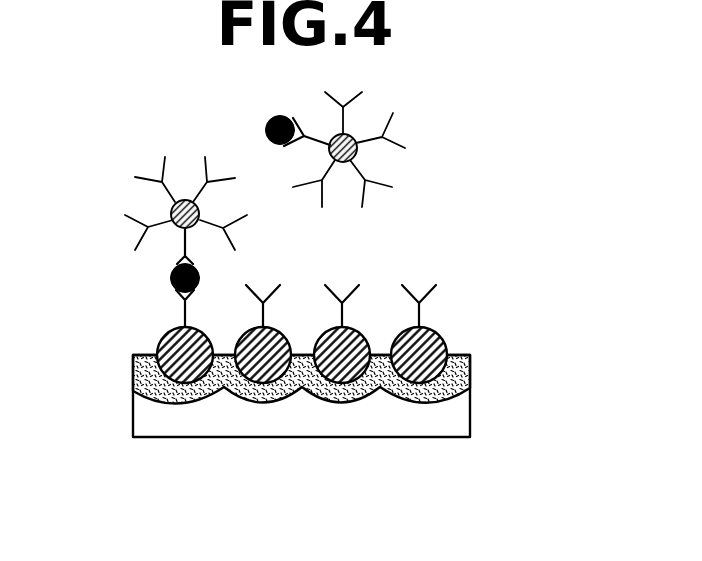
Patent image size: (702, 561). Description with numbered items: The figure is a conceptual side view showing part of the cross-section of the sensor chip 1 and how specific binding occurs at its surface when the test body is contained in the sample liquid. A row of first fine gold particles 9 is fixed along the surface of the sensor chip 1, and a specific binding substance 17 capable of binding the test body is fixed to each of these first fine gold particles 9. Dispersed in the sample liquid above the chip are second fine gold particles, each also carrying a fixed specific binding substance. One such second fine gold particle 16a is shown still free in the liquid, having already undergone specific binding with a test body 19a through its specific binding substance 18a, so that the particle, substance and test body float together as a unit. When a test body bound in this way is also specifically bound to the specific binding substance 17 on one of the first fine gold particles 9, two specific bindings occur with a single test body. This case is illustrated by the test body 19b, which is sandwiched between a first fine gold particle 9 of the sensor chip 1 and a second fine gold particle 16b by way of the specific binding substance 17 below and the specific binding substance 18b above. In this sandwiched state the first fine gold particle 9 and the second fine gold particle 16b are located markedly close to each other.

The sensor chip 1 is at (495, 386).
The first fine gold particles 9 is at (443, 344).
The second fine gold particle 16a is at (358, 158).
The second fine gold particle 16b is at (170, 208).
The specific binding substance 17 is at (183, 322).
The specific binding substance 18a is at (327, 176).
The specific binding substance 18b is at (190, 241).
The test body 19a is at (275, 120).
The test body 19b is at (166, 283).